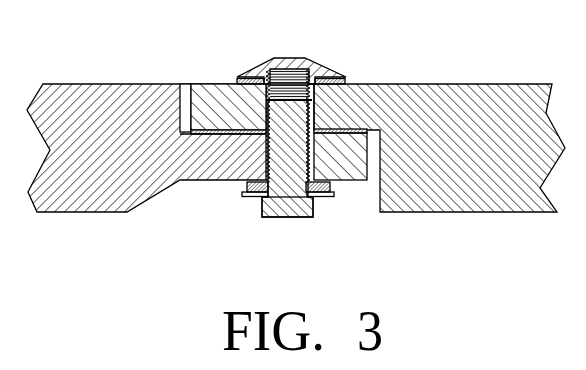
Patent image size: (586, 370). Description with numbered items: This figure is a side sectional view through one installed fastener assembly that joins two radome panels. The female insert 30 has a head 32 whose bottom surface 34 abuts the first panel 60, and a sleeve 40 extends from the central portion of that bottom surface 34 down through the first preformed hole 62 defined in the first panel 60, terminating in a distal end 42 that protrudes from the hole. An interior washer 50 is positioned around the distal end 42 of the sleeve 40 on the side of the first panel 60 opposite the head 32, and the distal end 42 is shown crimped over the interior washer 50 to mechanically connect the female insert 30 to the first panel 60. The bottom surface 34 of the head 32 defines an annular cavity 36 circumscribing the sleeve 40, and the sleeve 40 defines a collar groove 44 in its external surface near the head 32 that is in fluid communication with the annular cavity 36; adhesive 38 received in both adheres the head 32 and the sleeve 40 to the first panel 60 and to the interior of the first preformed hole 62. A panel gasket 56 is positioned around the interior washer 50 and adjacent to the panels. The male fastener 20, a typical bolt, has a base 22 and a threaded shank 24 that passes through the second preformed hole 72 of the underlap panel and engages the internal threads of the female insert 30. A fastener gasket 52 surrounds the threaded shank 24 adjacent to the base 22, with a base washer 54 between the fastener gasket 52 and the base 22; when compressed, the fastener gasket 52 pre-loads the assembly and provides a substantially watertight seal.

The male fastener 20 is at (298, 218).
The base 22 is at (317, 208).
The threaded shank 24 is at (315, 150).
The female insert 30 is at (292, 57).
The head 32 is at (275, 60).
The bottom surface 34 is at (343, 92).
The annular cavity 36 is at (247, 100).
The adhesive 38 is at (245, 80).
The sleeve 40 is at (330, 120).
The distal end 42 is at (268, 135).
The collar groove 44 is at (182, 107).
The interior washer 50 is at (192, 110).
The fastener gasket 52 is at (337, 188).
The base washer 54 is at (333, 193).
The panel gasket 56 is at (215, 134).
The first panel 60 is at (523, 84).
The first preformed hole 62 is at (330, 100).
The second preformed hole 72 is at (250, 192).